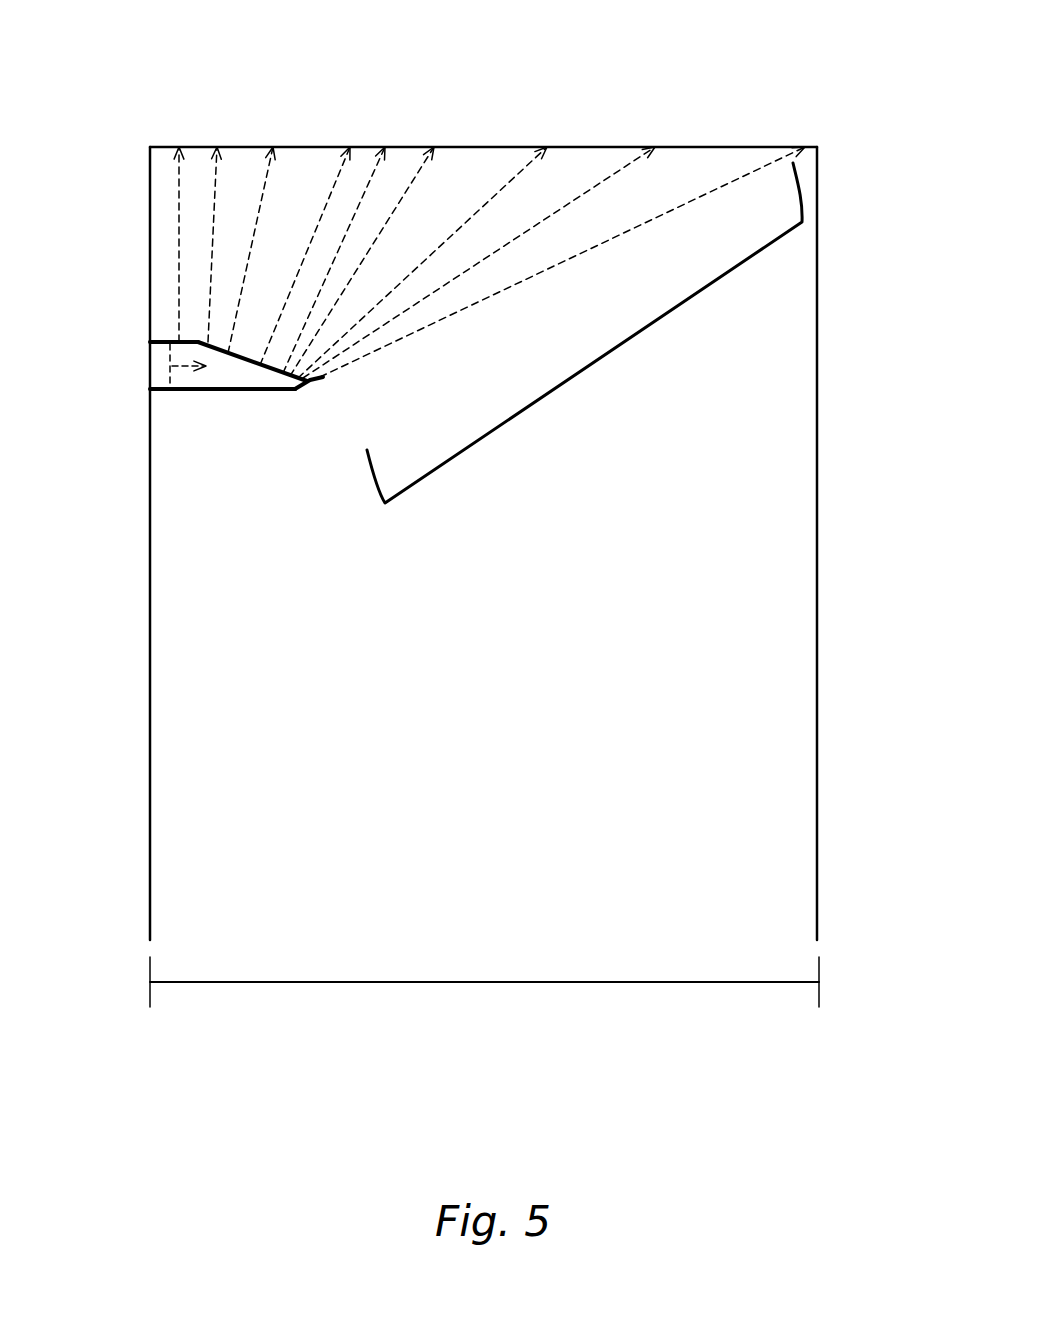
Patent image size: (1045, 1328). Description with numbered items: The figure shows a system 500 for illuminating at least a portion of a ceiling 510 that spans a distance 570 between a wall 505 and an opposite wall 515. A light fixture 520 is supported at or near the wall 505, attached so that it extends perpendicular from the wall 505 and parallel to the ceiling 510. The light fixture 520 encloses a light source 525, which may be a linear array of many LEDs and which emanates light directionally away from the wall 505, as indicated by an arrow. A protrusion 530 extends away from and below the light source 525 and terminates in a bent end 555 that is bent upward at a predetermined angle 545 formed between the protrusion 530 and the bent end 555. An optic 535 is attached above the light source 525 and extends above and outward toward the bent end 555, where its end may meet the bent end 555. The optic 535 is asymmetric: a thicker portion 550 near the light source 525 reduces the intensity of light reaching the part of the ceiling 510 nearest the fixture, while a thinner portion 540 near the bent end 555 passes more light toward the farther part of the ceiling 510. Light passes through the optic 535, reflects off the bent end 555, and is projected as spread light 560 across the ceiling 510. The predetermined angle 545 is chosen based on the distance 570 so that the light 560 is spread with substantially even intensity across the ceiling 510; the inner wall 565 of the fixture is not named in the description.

The system 500 is at (612, 63).
The wall 505 is at (150, 923).
The ceiling 510 is at (222, 147).
The wall 515 is at (817, 835).
The light fixture 520 is at (142, 333).
The light source 525 is at (165, 345).
The protrusion 530 is at (192, 392).
The optic 535 is at (211, 392).
The portion of the optic 540 is at (247, 364).
The predetermined angle 545 is at (296, 398).
The portion of the optic 550 is at (200, 340).
The bent end 555 is at (303, 384).
The light 560 is at (590, 366).
The nozzle inlet 565 is at (177, 392).
The distance 570 is at (484, 968).